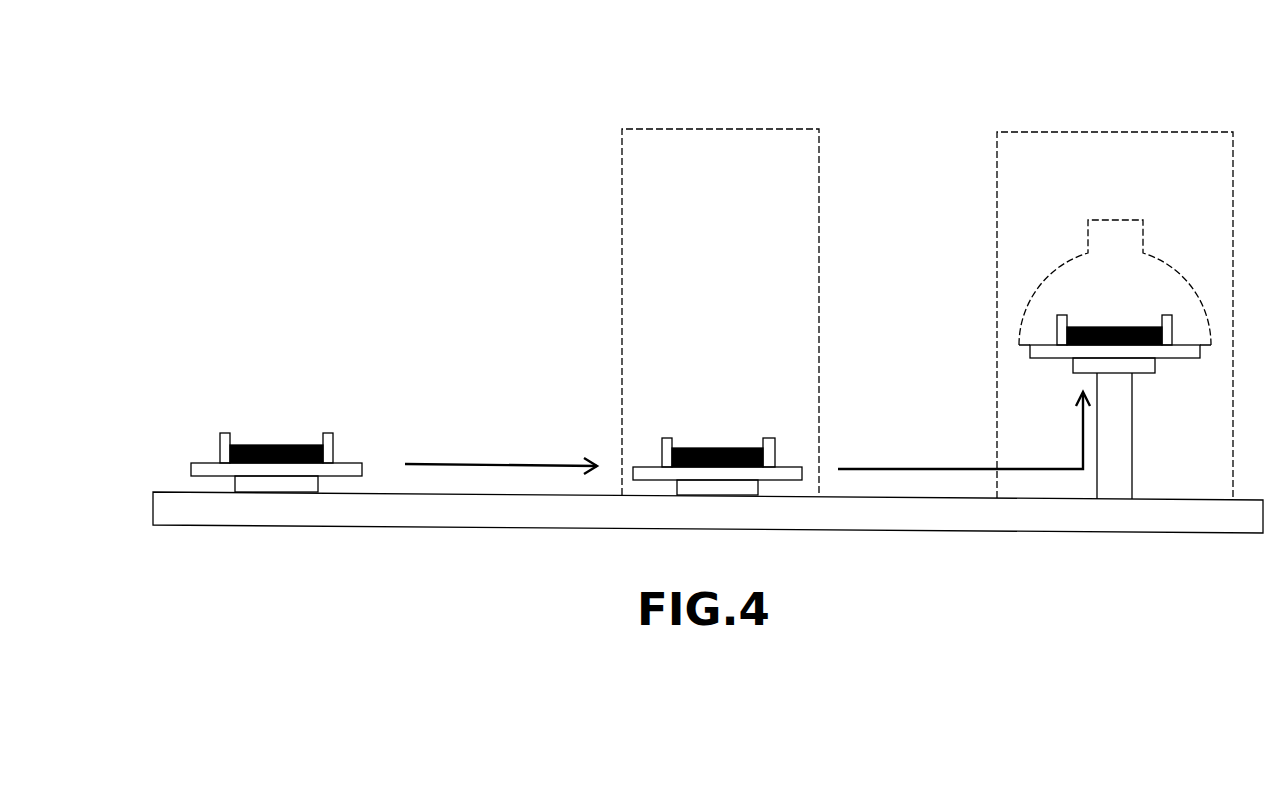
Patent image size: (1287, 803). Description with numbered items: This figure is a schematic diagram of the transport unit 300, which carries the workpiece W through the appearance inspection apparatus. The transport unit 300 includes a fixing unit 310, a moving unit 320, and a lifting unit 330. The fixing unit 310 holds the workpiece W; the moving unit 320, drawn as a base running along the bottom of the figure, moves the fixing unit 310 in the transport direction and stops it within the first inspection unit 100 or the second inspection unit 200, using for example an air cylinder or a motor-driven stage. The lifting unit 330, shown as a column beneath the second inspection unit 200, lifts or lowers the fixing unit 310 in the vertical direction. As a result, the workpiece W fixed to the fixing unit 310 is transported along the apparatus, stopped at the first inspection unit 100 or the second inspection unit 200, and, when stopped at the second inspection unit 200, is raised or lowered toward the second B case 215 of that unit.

The first inspection unit 100 is at (720, 129).
The second inspection unit 200 is at (1115, 132).
The second B case 215 is at (1163, 262).
The transport unit 300 is at (350, 575).
The fixing unit 310 is at (200, 462).
The moving unit 320 is at (513, 512).
The lifting unit 330 is at (1133, 475).
The workpiece W is at (303, 445).